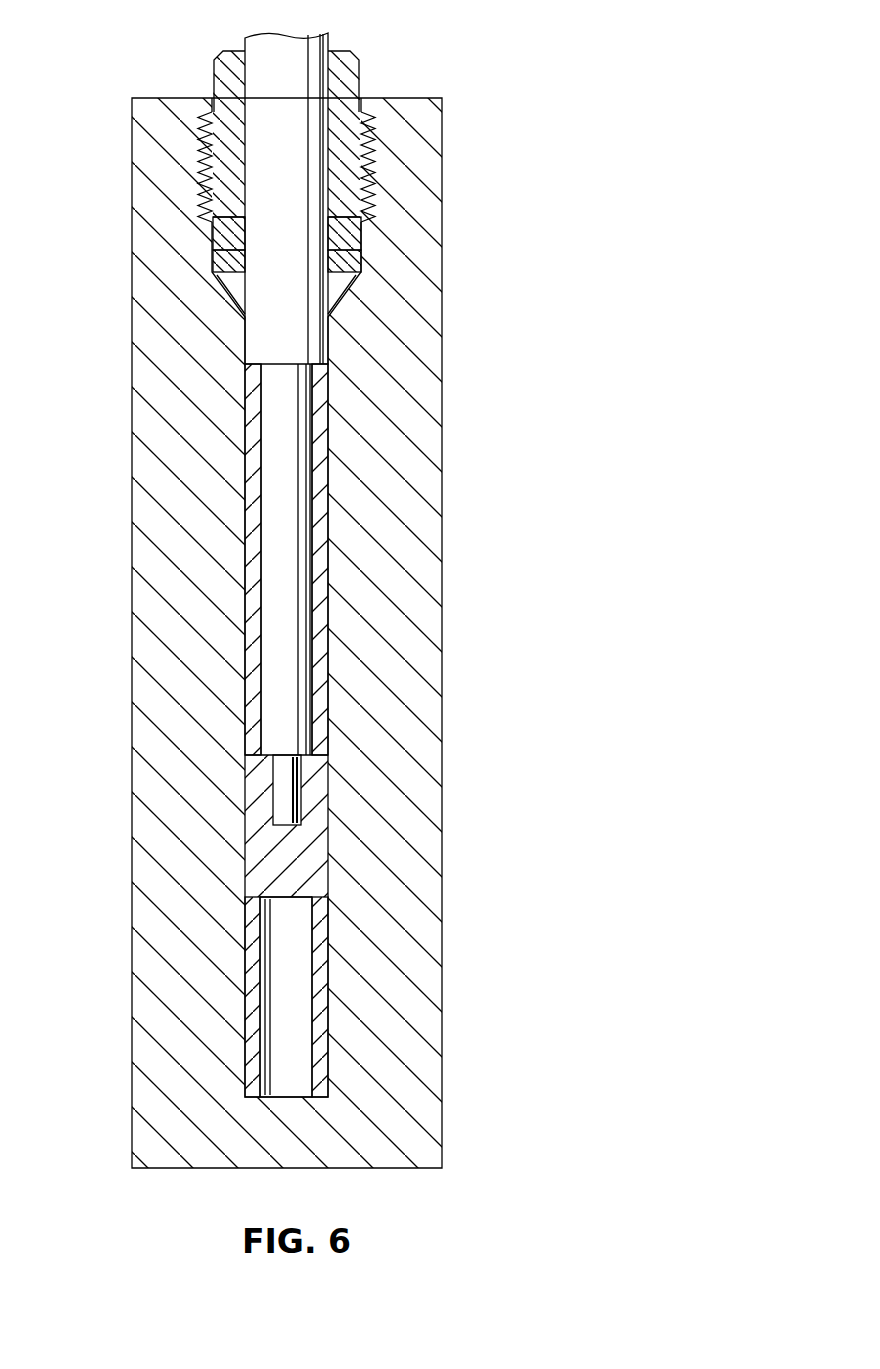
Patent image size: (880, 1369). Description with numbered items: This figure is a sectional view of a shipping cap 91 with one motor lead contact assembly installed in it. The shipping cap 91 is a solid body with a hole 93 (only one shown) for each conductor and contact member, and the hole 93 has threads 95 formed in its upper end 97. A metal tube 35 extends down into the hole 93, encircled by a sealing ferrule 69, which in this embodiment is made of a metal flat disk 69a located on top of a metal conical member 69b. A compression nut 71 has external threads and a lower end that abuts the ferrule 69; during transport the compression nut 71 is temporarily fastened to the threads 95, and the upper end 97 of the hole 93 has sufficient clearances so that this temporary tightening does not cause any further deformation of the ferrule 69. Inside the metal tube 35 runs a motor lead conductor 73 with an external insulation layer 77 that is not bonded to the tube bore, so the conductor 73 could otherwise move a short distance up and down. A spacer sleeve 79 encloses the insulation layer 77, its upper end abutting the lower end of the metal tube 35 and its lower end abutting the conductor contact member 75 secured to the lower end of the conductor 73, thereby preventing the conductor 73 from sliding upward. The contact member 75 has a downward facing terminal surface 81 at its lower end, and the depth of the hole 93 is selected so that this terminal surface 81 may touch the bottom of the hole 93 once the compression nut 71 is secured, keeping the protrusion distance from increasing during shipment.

The metal tube 35 is at (263, 45).
The compression nut 71 is at (226, 80).
The threads 95 is at (212, 150).
The sealing ferrule 69 is at (230, 232).
The metal flat disk 69a is at (334, 238).
The metal conical member 69b is at (345, 271).
The upper end 97 is at (229, 274).
The insulation layer 77 is at (272, 519).
The spacer sleeve 79 is at (322, 604).
The motor lead conductor 73 is at (283, 788).
The conductor contact member 75 is at (318, 832).
The hole 93 is at (258, 874).
The shipping cap 91 is at (428, 888).
The terminal surface 81 is at (320, 1099).